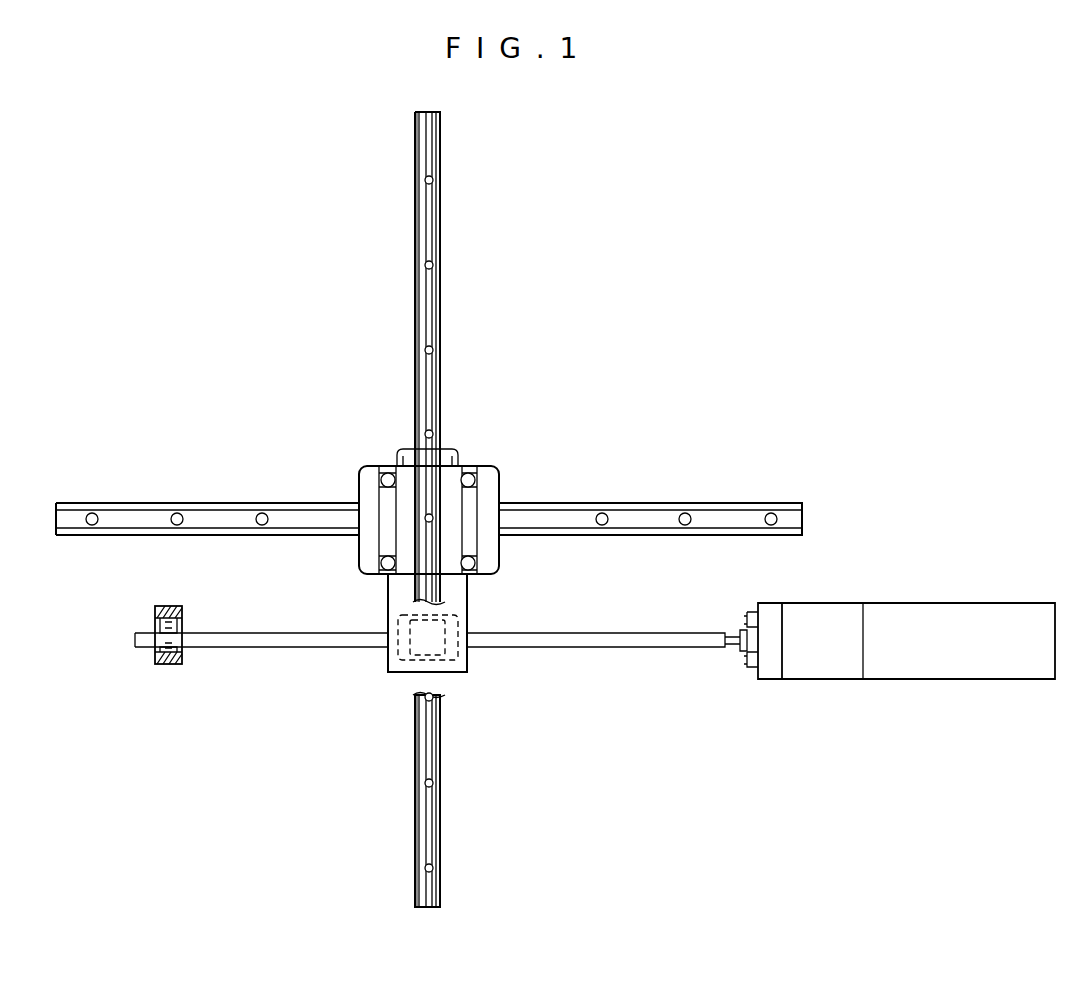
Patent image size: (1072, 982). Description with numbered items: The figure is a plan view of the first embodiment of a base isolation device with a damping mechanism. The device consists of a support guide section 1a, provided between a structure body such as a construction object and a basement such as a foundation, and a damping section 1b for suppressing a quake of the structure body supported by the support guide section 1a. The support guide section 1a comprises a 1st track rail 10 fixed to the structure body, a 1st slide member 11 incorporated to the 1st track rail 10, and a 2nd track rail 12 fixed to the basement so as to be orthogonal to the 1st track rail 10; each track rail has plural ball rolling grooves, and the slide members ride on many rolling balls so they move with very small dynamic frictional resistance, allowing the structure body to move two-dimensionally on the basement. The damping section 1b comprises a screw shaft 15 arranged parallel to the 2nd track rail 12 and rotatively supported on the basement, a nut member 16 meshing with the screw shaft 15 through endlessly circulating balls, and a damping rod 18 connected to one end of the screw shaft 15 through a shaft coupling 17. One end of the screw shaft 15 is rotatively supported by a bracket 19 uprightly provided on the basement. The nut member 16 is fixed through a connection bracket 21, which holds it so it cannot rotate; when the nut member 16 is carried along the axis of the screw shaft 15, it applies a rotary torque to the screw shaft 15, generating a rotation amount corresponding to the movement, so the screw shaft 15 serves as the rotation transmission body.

The support guide section 1a is at (340, 474).
The damping section 1b is at (680, 658).
The 1st track rail 10 is at (443, 204).
The 1st slide member 11 is at (470, 462).
The 2nd track rail 12 is at (603, 503).
The screw shaft 15 is at (605, 641).
The nut member 16 is at (433, 650).
The shaft coupling 17 is at (827, 660).
The damping rod 18 is at (937, 662).
The bracket 19 is at (162, 665).
The connection bracket 21 is at (388, 655).